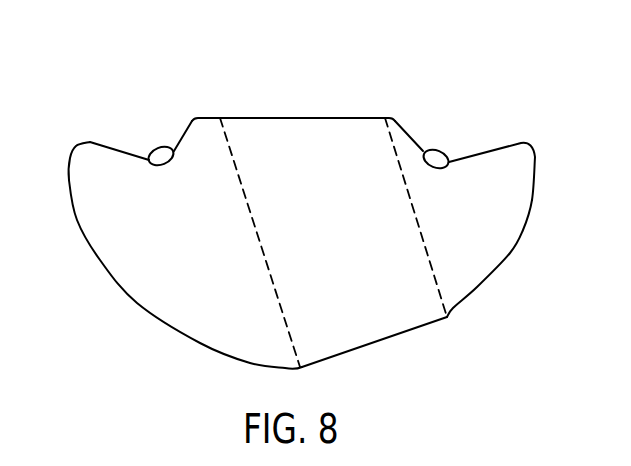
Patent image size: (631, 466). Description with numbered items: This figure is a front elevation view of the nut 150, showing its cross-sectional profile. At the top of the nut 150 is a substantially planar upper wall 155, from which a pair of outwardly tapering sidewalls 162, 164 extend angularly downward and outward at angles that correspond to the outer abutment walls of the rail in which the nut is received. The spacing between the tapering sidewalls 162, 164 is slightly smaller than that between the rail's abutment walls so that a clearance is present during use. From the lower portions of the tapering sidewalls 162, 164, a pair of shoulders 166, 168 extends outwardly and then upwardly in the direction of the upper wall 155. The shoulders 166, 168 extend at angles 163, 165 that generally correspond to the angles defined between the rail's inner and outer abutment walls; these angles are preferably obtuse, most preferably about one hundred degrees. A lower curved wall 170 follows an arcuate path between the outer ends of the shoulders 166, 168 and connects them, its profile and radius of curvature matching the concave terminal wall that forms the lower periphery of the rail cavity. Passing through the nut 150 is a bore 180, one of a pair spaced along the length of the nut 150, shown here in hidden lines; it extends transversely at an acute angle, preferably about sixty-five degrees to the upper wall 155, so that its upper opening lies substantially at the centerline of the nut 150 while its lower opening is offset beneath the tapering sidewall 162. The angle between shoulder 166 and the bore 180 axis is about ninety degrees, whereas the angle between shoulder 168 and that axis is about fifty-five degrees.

The nut 150 is at (299, 203).
The upper wall 155 is at (252, 118).
The tapering sidewall 162 is at (418, 143).
The angle 163 is at (442, 150).
The tapering sidewall 164 is at (183, 138).
The angle 165 is at (153, 148).
The shoulder 166 is at (476, 152).
The shoulder 168 is at (127, 152).
The lower curved wall 170 is at (137, 303).
The bore 180 is at (332, 147).